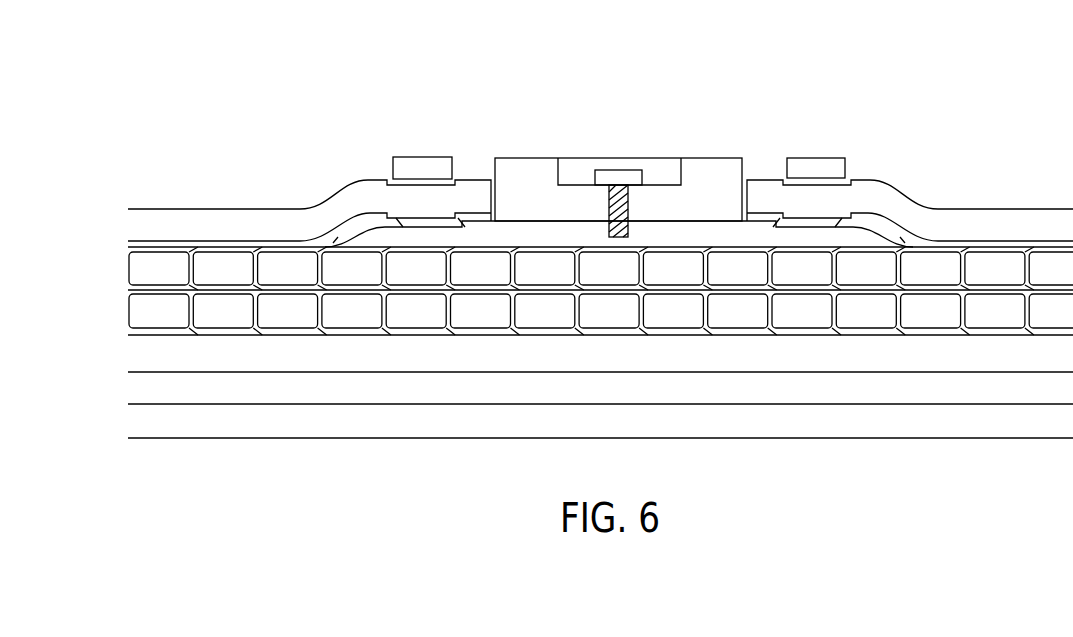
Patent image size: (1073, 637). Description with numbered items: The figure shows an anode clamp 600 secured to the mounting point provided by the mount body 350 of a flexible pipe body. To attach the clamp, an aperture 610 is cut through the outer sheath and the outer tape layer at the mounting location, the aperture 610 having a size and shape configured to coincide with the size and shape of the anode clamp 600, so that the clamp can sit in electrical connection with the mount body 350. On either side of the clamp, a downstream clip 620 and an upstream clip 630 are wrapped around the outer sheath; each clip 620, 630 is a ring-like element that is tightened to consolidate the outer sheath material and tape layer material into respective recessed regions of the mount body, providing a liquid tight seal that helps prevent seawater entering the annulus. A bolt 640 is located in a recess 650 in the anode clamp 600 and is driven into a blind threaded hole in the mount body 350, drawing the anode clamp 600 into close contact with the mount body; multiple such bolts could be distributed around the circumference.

The mount body 350 is at (378, 238).
The anode clamp 600 is at (712, 178).
The aperture 610 is at (487, 120).
The downstream clip 620 is at (417, 171).
The upstream clip 630 is at (818, 167).
The bolt 640 is at (626, 176).
The recess 650 is at (567, 172).